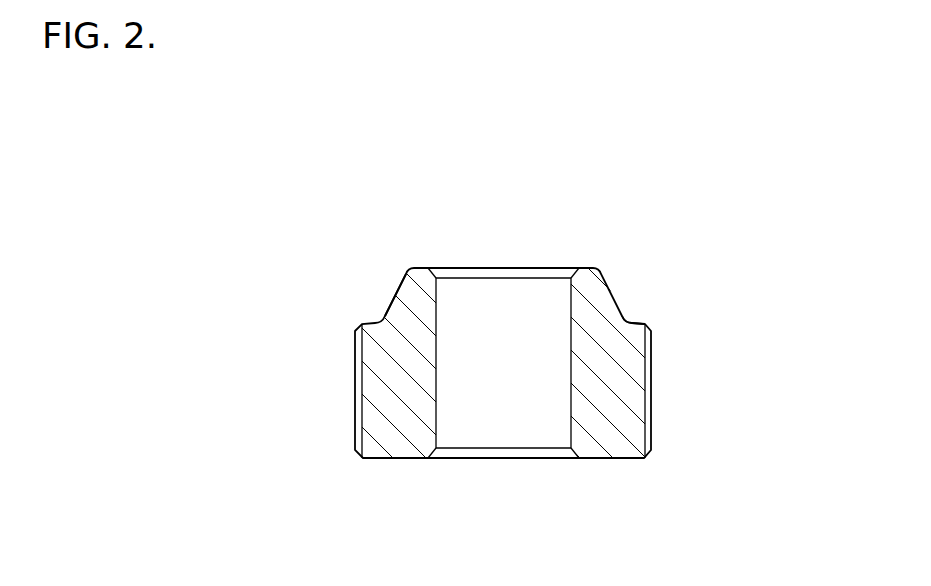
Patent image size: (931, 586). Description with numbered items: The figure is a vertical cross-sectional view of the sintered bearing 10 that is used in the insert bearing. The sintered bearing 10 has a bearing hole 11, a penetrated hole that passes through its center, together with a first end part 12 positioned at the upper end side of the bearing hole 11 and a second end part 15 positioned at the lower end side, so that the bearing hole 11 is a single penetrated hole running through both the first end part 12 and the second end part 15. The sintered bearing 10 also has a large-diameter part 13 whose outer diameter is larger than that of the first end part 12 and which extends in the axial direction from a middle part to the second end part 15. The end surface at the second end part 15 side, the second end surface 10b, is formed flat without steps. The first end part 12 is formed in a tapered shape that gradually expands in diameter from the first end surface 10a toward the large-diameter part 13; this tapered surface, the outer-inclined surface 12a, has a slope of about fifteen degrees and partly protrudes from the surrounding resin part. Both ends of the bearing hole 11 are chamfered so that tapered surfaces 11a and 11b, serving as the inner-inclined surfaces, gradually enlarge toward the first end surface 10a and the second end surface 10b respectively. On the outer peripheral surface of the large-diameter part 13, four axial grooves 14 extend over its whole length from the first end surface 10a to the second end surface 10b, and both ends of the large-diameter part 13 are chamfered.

The sintered bearing 10 is at (637, 212).
The first end surface 10a is at (487, 268).
The second end surface 10b is at (492, 459).
The bearing hole 11 is at (450, 266).
The tapered surface 11a is at (432, 268).
The tapered surface 11b is at (438, 459).
The first end part 12 is at (581, 267).
The outer-inclined surface 12a is at (398, 292).
The large-diameter part 13 is at (638, 333).
The grooves 14 is at (652, 373).
The second end part 15 is at (585, 460).